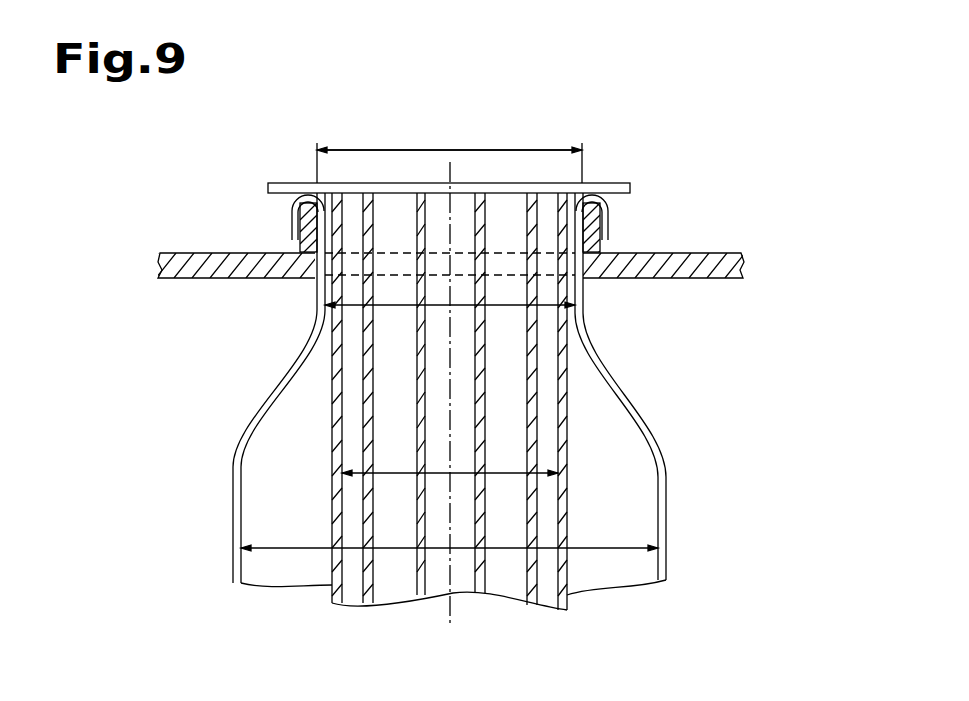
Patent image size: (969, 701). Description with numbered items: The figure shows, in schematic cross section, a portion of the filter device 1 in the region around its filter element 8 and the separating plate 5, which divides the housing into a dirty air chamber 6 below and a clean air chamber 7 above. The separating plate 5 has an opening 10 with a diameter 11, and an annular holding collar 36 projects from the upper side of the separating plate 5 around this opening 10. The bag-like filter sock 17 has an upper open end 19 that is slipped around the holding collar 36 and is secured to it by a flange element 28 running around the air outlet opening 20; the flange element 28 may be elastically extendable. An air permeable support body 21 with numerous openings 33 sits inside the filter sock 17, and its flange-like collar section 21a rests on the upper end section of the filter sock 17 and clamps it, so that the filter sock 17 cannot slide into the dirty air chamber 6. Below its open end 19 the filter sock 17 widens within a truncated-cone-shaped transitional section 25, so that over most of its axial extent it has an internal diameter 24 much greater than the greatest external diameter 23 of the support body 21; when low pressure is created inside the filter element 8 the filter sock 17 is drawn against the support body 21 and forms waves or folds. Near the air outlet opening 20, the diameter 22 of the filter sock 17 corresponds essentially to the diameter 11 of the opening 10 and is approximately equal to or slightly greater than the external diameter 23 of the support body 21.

The filter device 1 is at (724, 174).
The separating plate 5 is at (708, 250).
The dirty air chamber 6 is at (712, 375).
The clean air chamber 7 is at (193, 175).
The filter element 8 is at (185, 389).
The opening 10 is at (325, 262).
The diameter of the opening 11 is at (530, 147).
The filter sock 17 is at (229, 490).
The upper open end of the filter sock 19 is at (287, 229).
The air outlet opening 20 is at (466, 176).
The support body 21 is at (322, 564).
The collar section 21a is at (288, 181).
The diameter of the filter sock 22 is at (389, 306).
The external diameter of the support body 23 is at (402, 472).
The internal diameter of the filter sock 24 is at (304, 548).
The transitional section 25 is at (268, 369).
The flange element 28 is at (283, 236).
The openings 33 is at (565, 518).
The holding collar 36 is at (606, 212).